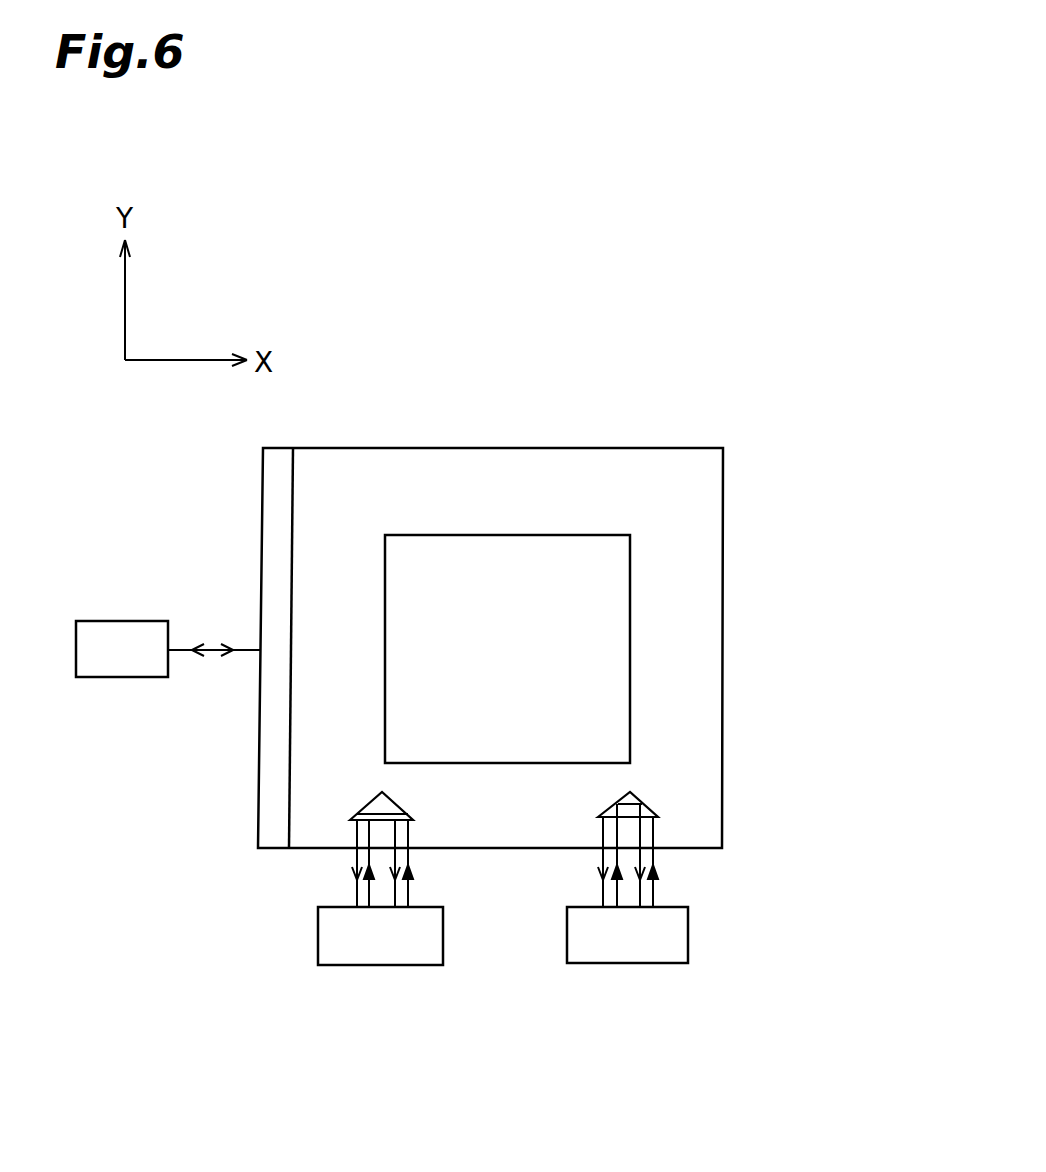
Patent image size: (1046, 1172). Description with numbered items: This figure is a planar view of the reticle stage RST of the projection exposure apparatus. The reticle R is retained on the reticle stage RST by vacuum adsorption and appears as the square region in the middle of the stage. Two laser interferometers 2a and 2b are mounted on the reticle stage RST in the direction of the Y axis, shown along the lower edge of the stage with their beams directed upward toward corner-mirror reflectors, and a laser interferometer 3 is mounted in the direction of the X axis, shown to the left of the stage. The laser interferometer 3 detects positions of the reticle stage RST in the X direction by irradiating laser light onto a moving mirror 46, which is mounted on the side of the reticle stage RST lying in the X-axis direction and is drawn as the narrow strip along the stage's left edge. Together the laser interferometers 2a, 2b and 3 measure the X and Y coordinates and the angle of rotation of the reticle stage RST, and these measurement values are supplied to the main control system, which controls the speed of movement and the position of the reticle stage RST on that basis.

The laser interferometer 2a is at (310, 888).
The laser interferometer 2b is at (575, 888).
The laser interferometer 3 is at (122, 705).
The moving mirror 46 is at (268, 793).
The reticle R is at (553, 550).
The reticle stage RST is at (703, 510).